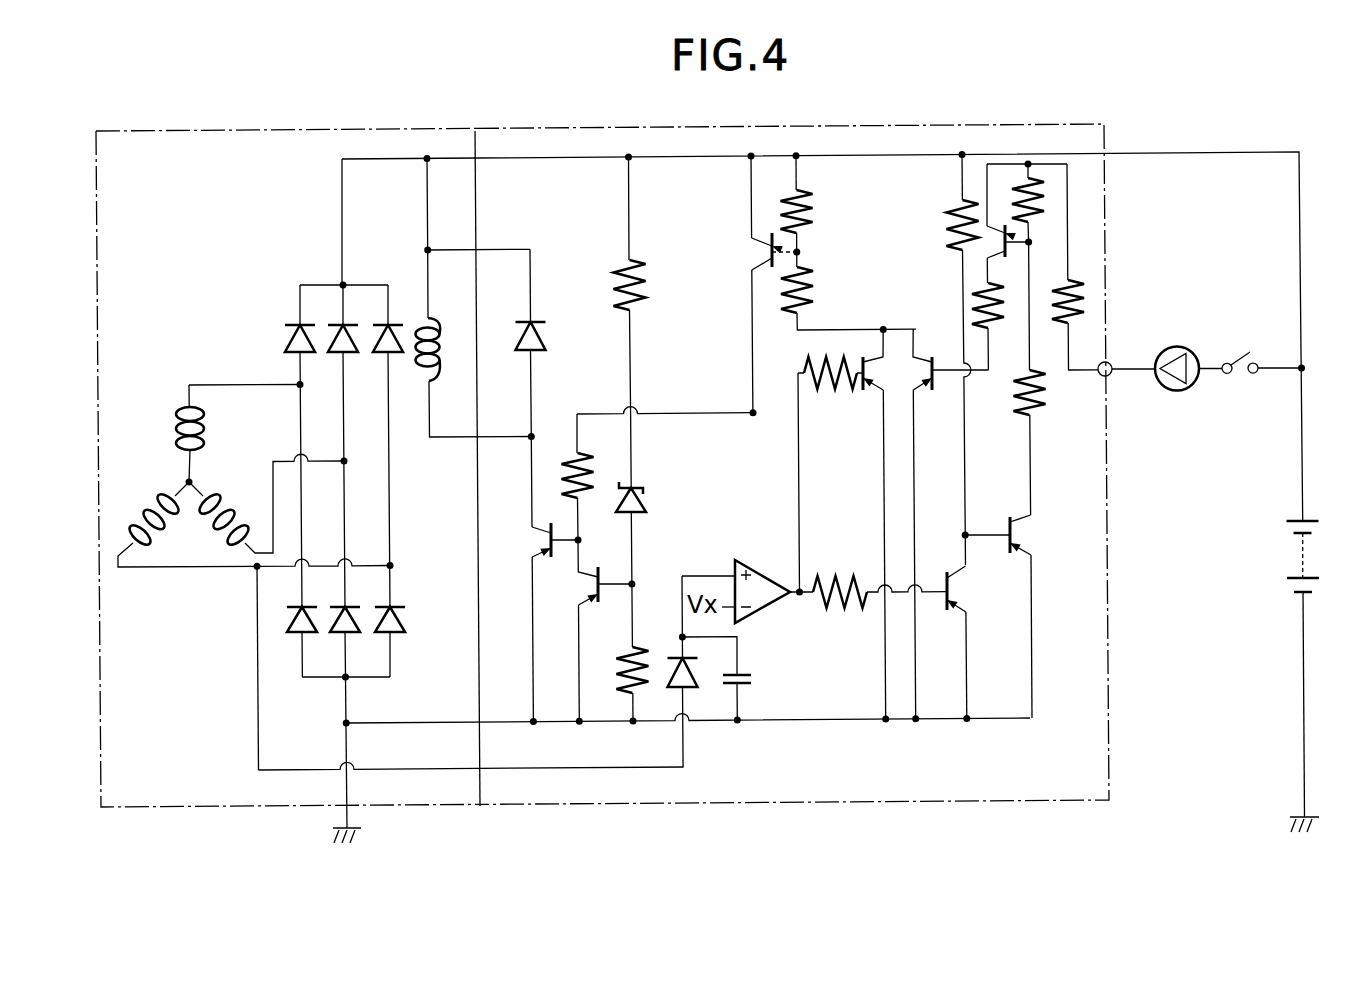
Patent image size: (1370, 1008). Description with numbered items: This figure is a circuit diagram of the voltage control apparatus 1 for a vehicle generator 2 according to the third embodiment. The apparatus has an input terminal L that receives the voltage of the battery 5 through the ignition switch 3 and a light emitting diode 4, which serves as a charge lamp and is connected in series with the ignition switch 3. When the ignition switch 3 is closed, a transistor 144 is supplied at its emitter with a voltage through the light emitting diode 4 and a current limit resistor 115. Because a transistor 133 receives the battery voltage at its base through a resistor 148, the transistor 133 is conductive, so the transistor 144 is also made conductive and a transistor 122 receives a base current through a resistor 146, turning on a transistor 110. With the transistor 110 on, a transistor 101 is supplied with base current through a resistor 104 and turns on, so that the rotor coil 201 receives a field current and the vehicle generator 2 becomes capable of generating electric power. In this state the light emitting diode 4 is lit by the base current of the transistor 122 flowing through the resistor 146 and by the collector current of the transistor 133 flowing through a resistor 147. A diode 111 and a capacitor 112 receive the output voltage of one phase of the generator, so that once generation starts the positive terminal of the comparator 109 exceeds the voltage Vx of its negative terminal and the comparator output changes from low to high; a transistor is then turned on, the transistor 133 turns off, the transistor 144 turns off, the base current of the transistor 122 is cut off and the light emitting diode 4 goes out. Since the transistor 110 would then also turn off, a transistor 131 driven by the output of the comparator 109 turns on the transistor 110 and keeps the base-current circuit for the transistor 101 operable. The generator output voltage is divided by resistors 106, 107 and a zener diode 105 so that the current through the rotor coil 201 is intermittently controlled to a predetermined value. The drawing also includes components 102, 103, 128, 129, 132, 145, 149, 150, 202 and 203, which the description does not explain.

The voltage control apparatus 1 is at (553, 808).
The vehicle generator 2 is at (175, 808).
The ignition switch 3 is at (1240, 358).
The light emitting diode 4 is at (1183, 350).
The battery 5 is at (1283, 537).
The input terminal L is at (1110, 377).
The transistor 101 is at (542, 562).
The diode 102 is at (546, 325).
The transistor 103 is at (598, 606).
The resistor 104 is at (598, 412).
The zener diode 105 is at (645, 482).
The resistor 106 is at (652, 280).
The resistor 107 is at (643, 630).
The comparator 109 is at (777, 608).
The transistor 110 is at (757, 256).
The diode 111 is at (690, 690).
The capacitor 112 is at (735, 680).
The current limit resistor 115 is at (1085, 300).
The transistor 122 is at (926, 400).
The resistor 128 is at (832, 210).
The resistor 129 is at (818, 287).
The transistor 131 is at (866, 405).
The transistor 132 is at (955, 592).
The transistor 133 is at (1020, 535).
The transistor 144 is at (1000, 262).
The resistor 145 is at (1045, 197).
The resistor 146 is at (975, 297).
The resistor 147 is at (1018, 420).
The resistor 148 is at (948, 226).
The resistor 149 is at (828, 576).
The resistor 150 is at (820, 395).
The rotor coil 201 is at (418, 312).
The stator coil 202 is at (182, 478).
The rectifier 203 is at (313, 367).